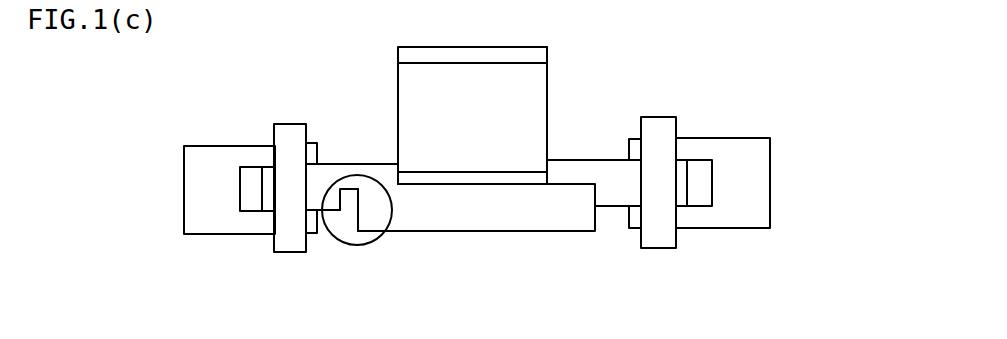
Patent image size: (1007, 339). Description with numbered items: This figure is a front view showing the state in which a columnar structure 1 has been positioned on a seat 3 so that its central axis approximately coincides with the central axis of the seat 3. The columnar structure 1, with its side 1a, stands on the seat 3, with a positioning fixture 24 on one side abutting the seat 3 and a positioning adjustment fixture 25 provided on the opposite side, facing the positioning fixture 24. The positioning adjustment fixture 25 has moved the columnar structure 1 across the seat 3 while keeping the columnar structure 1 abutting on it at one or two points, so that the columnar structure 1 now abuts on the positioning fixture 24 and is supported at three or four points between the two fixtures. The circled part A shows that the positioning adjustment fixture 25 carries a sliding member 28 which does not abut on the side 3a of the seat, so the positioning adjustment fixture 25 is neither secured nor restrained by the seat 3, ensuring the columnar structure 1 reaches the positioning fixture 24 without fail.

The columnar structure 1 is at (542, 94).
The side face of main body 1a is at (549, 138).
The seat 3 is at (504, 222).
The side of the seat 3a is at (356, 217).
The positioning fixture 24 is at (750, 152).
The positioning adjustment fixture 25 is at (215, 158).
The sliding member 28 is at (350, 192).
The circled part A is at (378, 243).